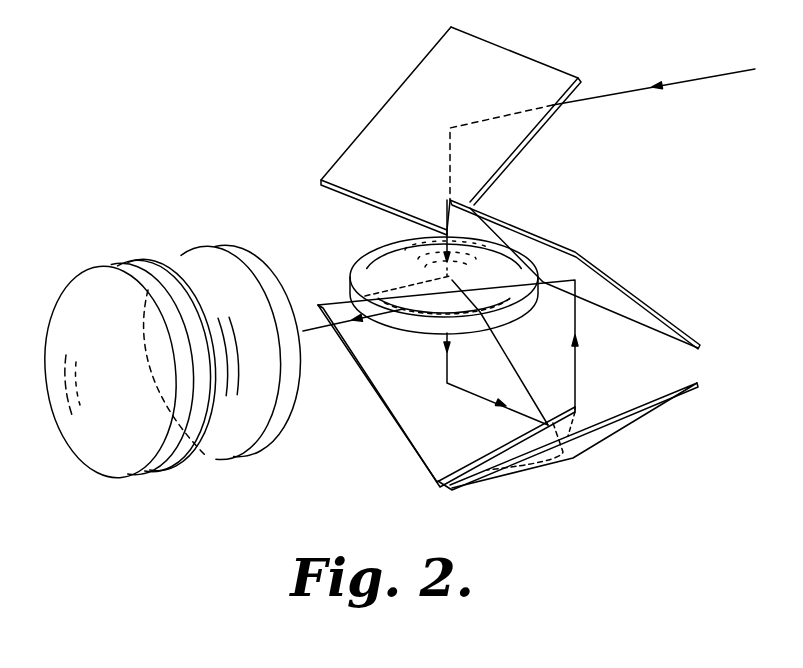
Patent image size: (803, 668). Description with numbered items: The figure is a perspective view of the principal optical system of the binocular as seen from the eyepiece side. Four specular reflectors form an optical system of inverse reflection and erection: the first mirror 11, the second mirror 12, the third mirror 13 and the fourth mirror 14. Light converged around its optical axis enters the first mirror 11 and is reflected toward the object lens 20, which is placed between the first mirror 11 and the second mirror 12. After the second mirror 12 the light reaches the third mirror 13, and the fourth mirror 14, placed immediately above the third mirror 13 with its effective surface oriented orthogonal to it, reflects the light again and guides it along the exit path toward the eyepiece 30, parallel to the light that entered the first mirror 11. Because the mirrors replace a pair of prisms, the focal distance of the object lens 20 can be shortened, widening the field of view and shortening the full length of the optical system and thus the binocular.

The first mirror 11 is at (492, 62).
The second mirror 12 is at (404, 397).
The third mirror 13 is at (623, 413).
The fourth mirror 14 is at (603, 287).
The object lens 20 is at (387, 265).
The eyepiece 30 is at (207, 230).